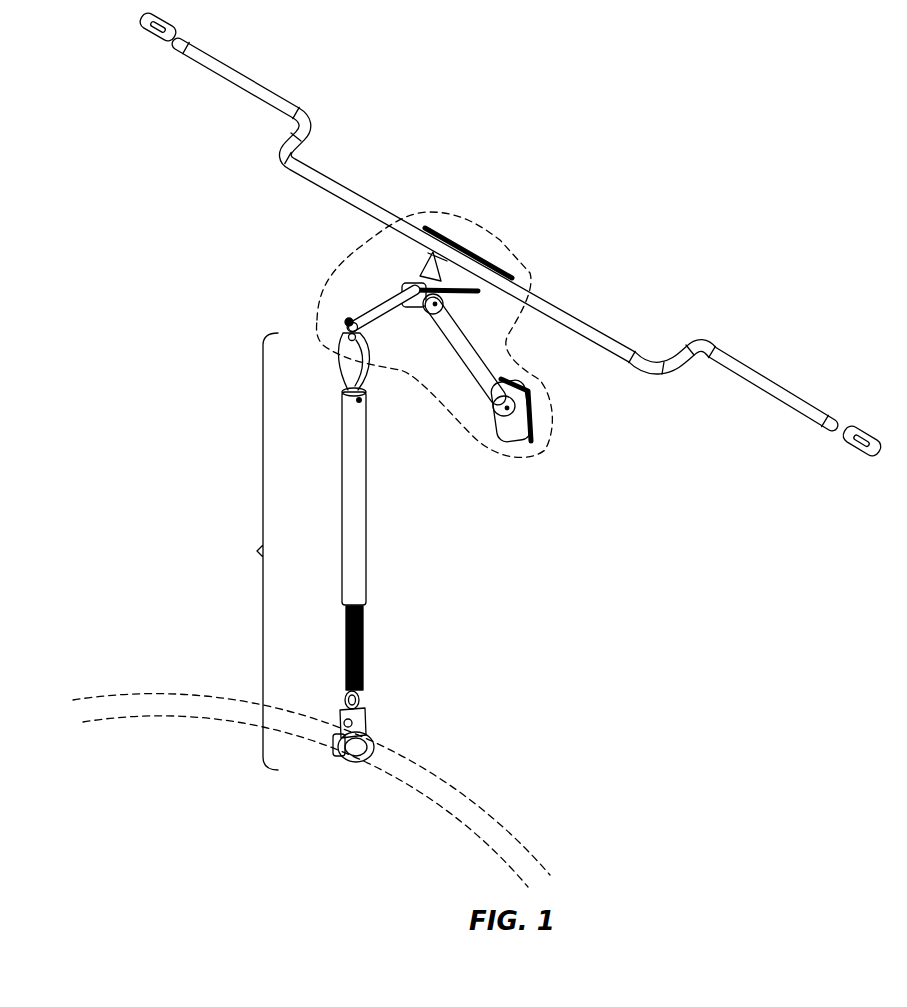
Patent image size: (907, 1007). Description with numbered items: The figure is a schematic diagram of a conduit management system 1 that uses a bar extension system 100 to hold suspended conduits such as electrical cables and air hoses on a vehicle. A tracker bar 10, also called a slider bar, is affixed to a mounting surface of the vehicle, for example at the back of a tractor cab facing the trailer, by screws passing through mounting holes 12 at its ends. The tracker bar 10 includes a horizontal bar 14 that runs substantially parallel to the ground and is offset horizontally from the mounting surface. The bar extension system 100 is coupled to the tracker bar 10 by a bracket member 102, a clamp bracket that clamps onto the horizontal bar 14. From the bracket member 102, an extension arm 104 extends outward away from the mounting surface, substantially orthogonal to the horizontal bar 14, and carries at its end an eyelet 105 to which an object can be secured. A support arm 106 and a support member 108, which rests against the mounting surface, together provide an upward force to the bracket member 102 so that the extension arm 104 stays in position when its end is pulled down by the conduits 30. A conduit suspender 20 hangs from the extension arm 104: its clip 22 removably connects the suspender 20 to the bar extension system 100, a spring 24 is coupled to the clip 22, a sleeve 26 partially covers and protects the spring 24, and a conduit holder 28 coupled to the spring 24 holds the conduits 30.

The conduit management system 1 is at (148, 255).
The tracker bar 10 is at (770, 387).
The mounting holes 12 is at (860, 442).
The horizontal bar 14 is at (585, 332).
The conduit suspender 20 is at (253, 551).
The clip 22 is at (343, 360).
The spring 24 is at (347, 650).
The sleeve 26 is at (347, 495).
The conduit holder 28 is at (340, 747).
The conduits 30 is at (220, 703).
The bar extension system 100 is at (477, 237).
The bracket member 102 is at (417, 283).
The extension arm 104 is at (370, 307).
The eyelet 105 is at (343, 337).
The support arm 106 is at (463, 360).
The support member 108 is at (518, 433).